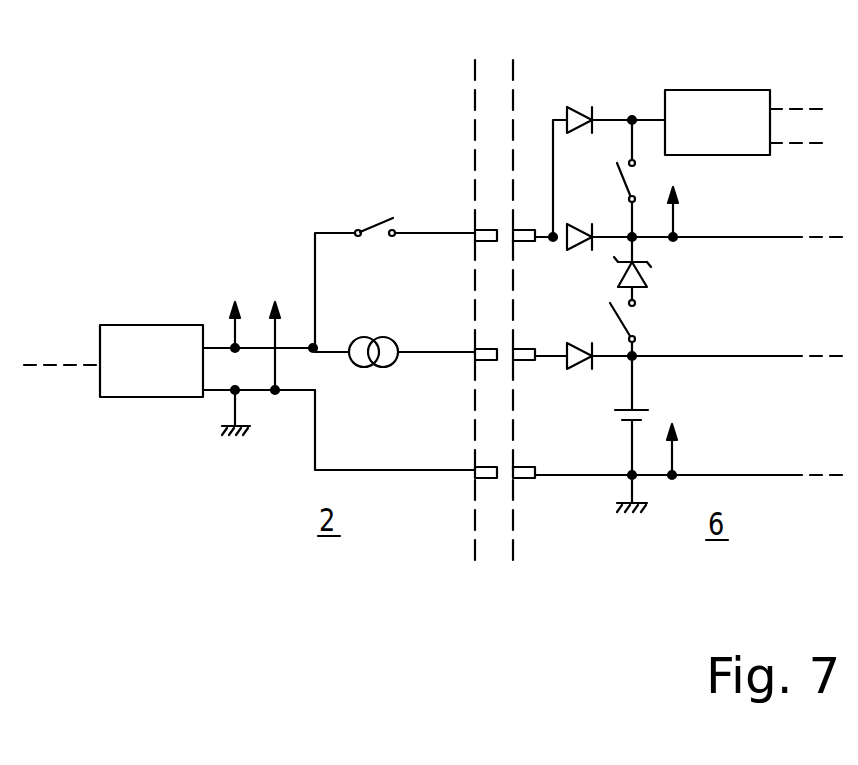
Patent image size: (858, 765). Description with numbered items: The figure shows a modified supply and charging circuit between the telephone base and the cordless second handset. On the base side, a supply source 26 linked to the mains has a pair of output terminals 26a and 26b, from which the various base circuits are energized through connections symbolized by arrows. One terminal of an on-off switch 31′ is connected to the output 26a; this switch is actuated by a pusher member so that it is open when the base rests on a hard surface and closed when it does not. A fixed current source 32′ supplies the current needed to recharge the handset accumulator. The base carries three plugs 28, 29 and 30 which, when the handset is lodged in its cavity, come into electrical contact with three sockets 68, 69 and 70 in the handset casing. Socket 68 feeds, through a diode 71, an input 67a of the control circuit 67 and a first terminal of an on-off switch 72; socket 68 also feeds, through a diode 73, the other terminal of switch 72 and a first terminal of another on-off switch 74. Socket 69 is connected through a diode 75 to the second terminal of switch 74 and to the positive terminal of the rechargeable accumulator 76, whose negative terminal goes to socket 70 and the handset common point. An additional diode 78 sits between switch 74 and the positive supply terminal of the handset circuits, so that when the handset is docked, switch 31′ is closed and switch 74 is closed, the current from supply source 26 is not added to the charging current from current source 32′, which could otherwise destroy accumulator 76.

The supply source 26 is at (156, 328).
The output terminal 26a is at (204, 340).
The output terminal 26b is at (204, 398).
The on-off switch 31′ is at (372, 238).
The fixed current source 32′ is at (385, 364).
The plug 28 is at (485, 243).
The plug 29 is at (485, 362).
The plug 30 is at (485, 480).
The socket 68 is at (524, 232).
The socket 69 is at (523, 362).
The socket 70 is at (527, 480).
The diode 71 is at (583, 113).
The control circuit 67 is at (712, 90).
The input 67a is at (660, 118).
The on-off switch 72 is at (636, 181).
The diode 73 is at (573, 253).
The additional diode 78 is at (648, 278).
The on-off switch 74 is at (633, 321).
The diode 75 is at (573, 370).
The accumulator 76 is at (645, 408).